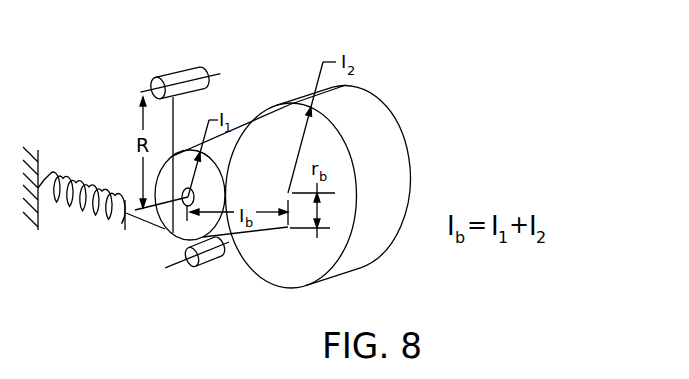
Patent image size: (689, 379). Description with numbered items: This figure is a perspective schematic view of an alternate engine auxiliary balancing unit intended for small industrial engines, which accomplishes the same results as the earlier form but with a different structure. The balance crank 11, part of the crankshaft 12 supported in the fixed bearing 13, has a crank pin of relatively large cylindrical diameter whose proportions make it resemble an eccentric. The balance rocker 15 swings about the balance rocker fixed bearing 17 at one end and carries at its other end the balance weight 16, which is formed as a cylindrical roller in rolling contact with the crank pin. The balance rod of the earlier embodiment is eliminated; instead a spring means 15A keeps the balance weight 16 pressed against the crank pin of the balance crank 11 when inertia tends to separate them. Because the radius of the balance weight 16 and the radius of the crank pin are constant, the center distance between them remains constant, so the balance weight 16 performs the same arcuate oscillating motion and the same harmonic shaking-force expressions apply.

The balance crank 11 is at (413, 163).
The crankshaft 12 is at (228, 251).
The fixed bearing 13 is at (196, 266).
The balance rocker 15 is at (173, 72).
The spring means 15A is at (87, 183).
The balance weight 16 is at (165, 236).
The balance rocker fixed bearing 17 is at (168, 73).